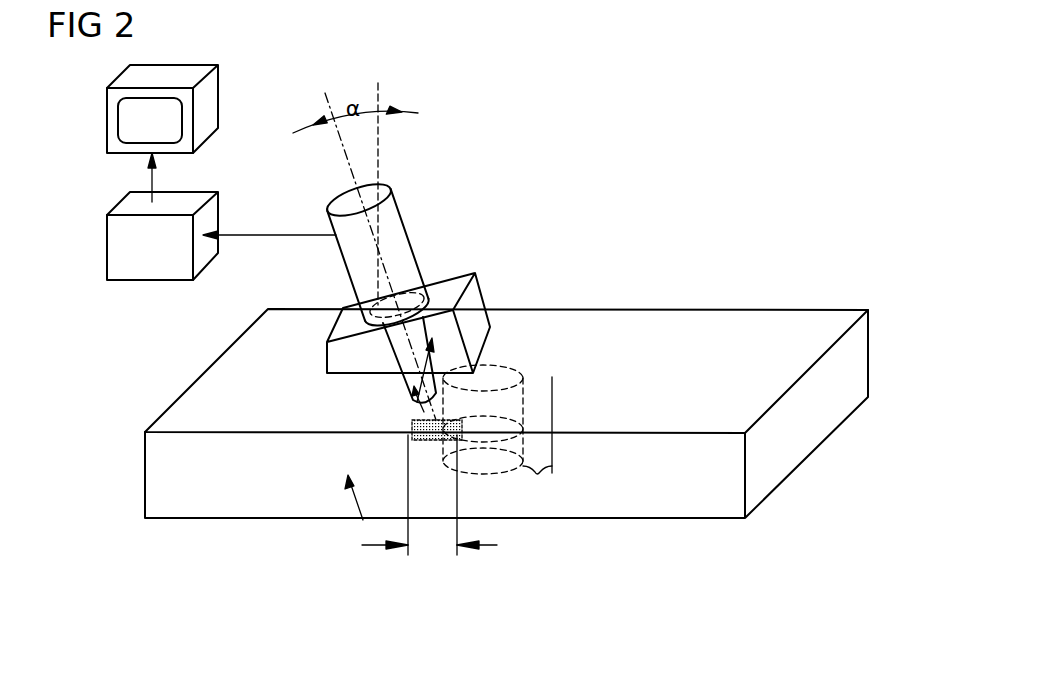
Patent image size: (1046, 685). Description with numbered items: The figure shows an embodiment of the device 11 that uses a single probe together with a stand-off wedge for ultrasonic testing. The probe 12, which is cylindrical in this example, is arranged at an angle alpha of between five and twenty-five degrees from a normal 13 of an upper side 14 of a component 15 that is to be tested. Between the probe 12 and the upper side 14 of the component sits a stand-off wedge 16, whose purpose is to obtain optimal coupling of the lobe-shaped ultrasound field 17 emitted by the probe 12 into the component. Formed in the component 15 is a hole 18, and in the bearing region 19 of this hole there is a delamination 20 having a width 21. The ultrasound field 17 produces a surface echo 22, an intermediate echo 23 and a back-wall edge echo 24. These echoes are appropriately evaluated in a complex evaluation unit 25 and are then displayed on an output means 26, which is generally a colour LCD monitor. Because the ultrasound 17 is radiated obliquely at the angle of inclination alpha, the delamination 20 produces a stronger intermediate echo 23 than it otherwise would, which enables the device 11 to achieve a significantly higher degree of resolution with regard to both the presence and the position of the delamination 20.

The device 11 is at (506, 126).
The probe 12 is at (397, 202).
The normal 13 is at (380, 148).
The upper side 14 is at (713, 398).
The component 15 is at (812, 437).
The stand-off wedge 16 is at (478, 292).
The ultrasound field 17 is at (417, 337).
The hole 18 is at (523, 370).
The bearing region 19 is at (538, 442).
The delamination 20 is at (412, 437).
The width 21 is at (435, 548).
The surface echo 22 is at (433, 357).
The intermediate echo 23 is at (418, 413).
The back-wall edge echo 24 is at (353, 500).
The evaluation unit 25 is at (107, 246).
The output means 26 is at (107, 118).